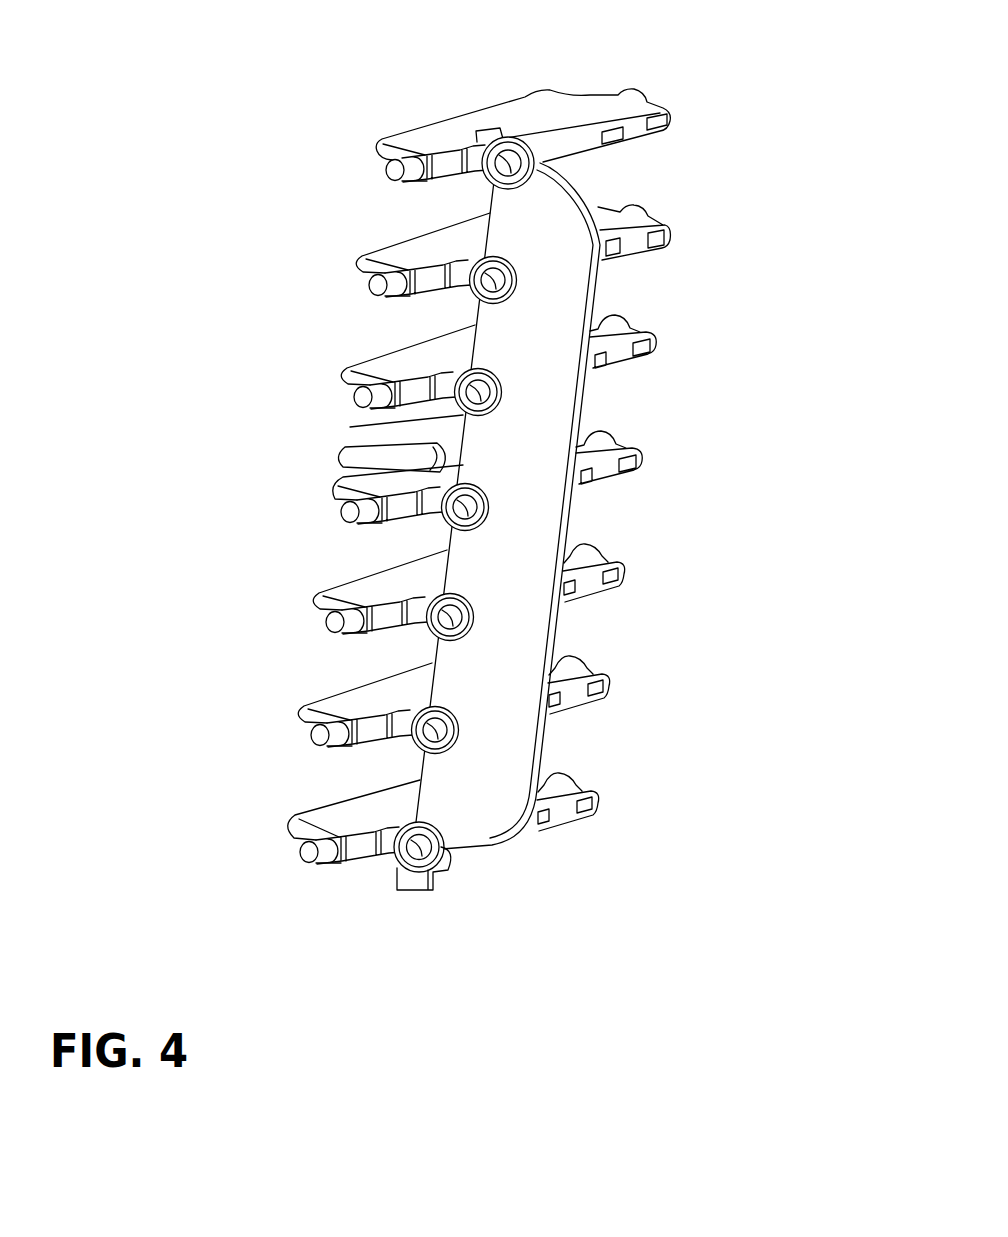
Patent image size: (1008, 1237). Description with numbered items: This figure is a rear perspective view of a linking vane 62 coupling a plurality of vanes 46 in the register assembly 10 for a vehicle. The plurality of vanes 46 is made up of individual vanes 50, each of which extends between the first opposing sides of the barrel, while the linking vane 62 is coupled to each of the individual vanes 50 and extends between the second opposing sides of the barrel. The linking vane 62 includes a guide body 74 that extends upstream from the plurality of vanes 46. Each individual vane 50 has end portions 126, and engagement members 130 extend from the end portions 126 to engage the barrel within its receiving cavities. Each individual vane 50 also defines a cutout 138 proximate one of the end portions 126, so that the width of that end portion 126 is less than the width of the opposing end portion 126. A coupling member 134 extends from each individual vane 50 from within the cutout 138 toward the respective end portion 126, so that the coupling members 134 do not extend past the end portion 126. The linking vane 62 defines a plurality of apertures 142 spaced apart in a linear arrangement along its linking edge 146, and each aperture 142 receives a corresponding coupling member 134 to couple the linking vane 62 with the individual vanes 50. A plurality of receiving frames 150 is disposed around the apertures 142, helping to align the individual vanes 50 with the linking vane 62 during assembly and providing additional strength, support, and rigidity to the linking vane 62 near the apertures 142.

The register assembly 10 is at (749, 42).
The plurality of vanes 46 is at (692, 192).
The individual vane 50 is at (530, 108).
The linking vane 62 is at (524, 521).
The guide body 74 is at (502, 696).
The end portion 126 is at (598, 93).
The engagement member 130 is at (387, 173).
The coupling member 134 is at (422, 757).
The cutout 138 is at (372, 725).
The plurality of apertures 142 is at (472, 292).
The linking edge 146 is at (350, 427).
The plurality of receiving frames 150 is at (510, 398).